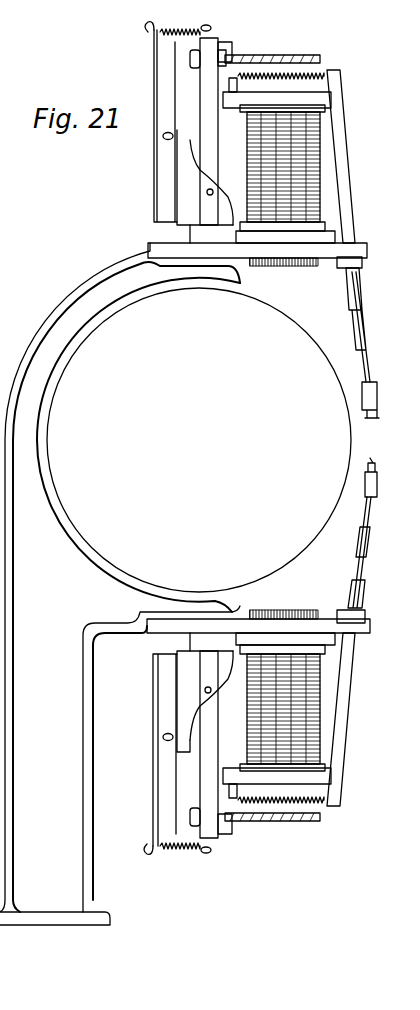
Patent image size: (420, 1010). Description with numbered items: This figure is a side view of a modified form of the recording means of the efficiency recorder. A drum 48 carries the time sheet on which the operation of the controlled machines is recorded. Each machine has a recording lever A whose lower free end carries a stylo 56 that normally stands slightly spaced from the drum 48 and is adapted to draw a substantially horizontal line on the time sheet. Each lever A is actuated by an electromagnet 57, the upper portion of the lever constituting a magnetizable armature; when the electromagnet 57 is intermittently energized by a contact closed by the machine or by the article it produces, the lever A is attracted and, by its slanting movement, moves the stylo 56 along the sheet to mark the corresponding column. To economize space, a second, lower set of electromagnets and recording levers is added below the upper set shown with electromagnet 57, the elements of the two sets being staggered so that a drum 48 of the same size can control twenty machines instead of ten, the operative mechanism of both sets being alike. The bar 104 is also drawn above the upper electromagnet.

The drum 48 is at (199, 440).
The stylo 56 is at (362, 400).
The electromagnet 57 is at (303, 166).
The recording lever A is at (343, 205).
The armature bar 104 is at (282, 58).